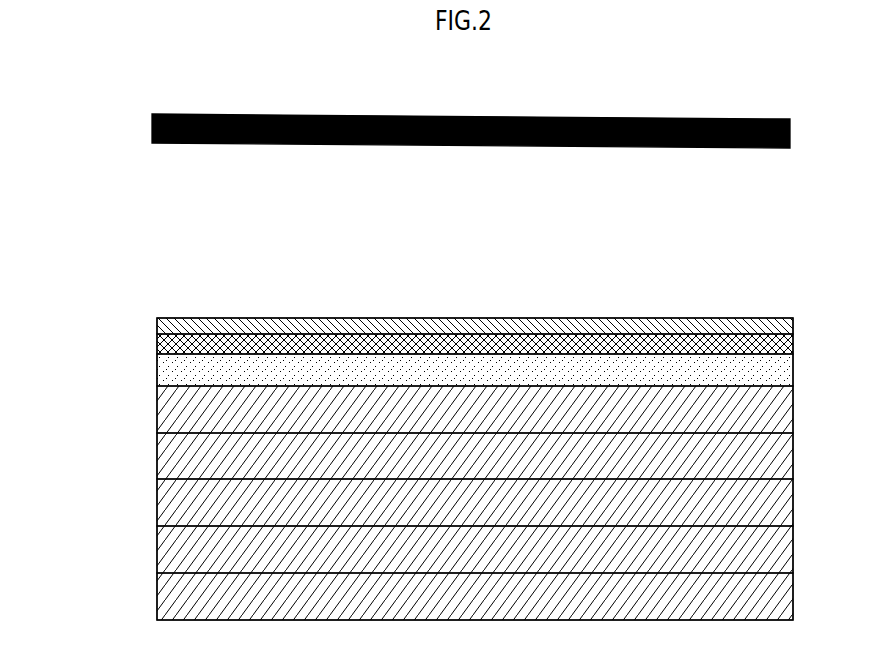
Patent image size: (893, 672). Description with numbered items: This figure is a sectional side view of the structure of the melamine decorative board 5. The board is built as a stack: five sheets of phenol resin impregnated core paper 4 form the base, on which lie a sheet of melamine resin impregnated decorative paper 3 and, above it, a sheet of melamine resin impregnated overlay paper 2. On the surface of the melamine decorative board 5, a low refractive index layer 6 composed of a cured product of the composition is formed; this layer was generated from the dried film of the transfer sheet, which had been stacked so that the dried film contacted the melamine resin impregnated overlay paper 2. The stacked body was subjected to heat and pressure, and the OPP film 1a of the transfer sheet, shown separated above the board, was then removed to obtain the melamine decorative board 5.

The OPP film 1a is at (152, 125).
The melamine resin impregnated overlay paper 2 is at (795, 346).
The melamine resin impregnated decorative paper 3 is at (795, 364).
The phenol resin impregnated core paper 4 is at (795, 404).
The melamine decorative board 5 is at (607, 265).
The low refractive index layer 6 is at (156, 318).